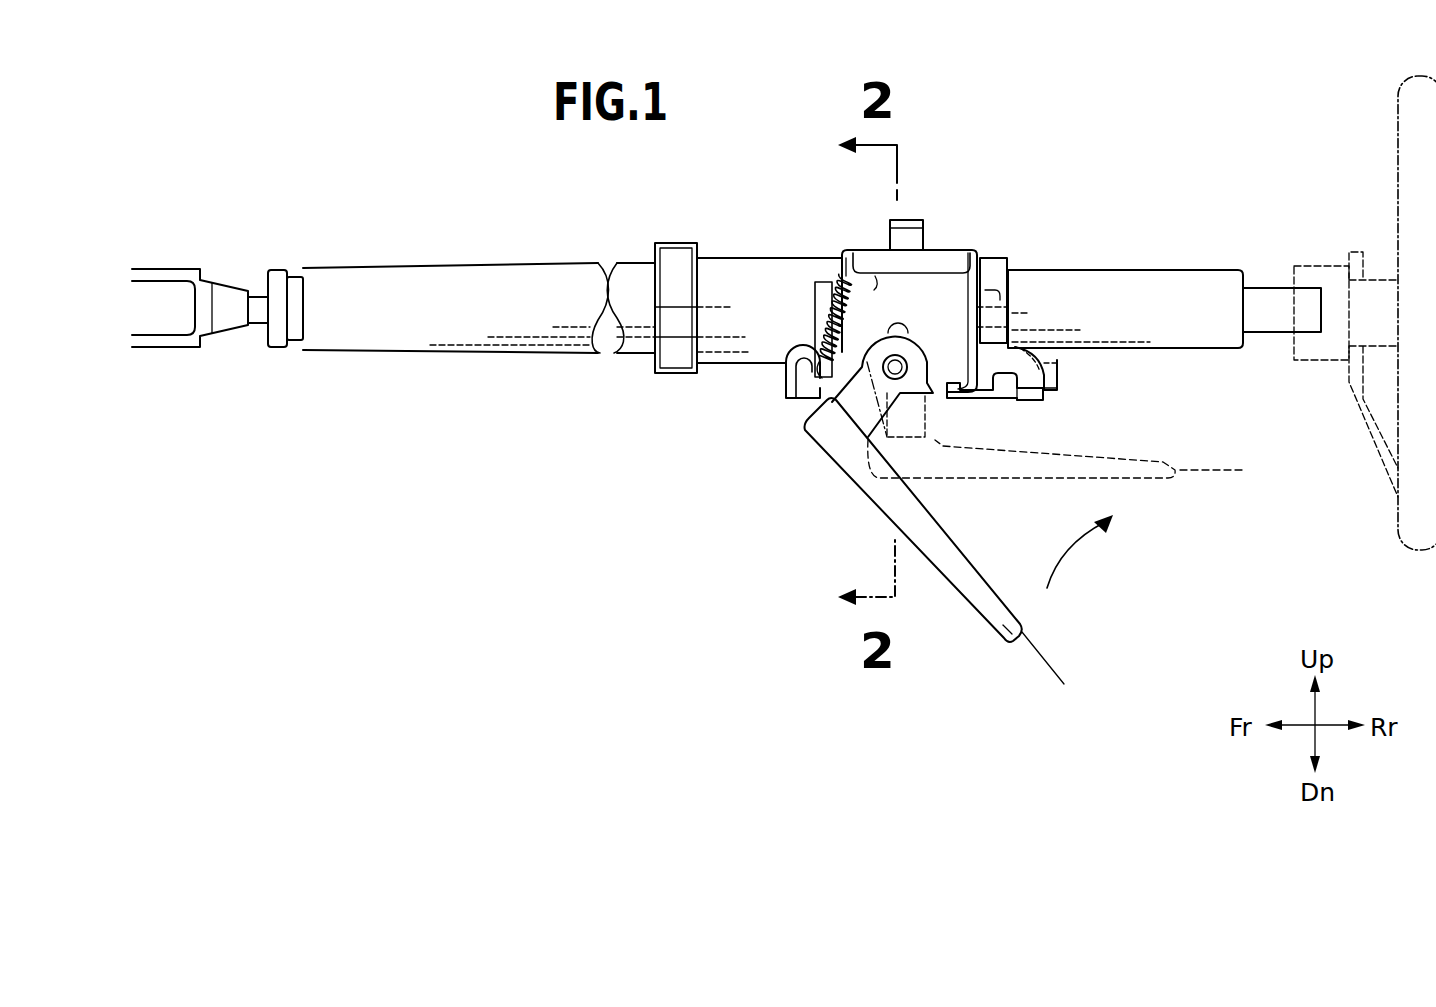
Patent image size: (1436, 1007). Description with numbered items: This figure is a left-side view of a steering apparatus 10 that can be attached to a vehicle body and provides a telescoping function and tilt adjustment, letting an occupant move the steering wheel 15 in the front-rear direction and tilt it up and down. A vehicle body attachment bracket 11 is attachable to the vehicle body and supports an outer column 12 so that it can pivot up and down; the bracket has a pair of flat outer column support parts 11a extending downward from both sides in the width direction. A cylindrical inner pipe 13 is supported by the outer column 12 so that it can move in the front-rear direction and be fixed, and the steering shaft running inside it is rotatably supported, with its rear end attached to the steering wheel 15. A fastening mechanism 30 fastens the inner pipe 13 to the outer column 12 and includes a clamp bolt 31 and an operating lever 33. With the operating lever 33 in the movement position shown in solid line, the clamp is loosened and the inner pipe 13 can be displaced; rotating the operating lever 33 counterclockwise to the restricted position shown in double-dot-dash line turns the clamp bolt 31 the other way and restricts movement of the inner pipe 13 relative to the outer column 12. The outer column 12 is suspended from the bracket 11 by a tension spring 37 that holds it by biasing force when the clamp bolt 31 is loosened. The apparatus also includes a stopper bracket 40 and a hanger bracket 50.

The steering apparatus 10 is at (343, 118).
The vehicle body attachment bracket 11 is at (930, 238).
The outer column support part 11a is at (940, 305).
The outer column 12 is at (452, 283).
The inner pipe 13 is at (1115, 292).
The steering wheel 15 is at (1396, 112).
The fastening mechanism 30 is at (792, 415).
The clamp bolt 31 is at (900, 372).
The operating lever 33 is at (985, 612).
The tension spring 37 is at (822, 318).
The stopper bracket 40 is at (1052, 365).
The hanger bracket 50 is at (1030, 390).